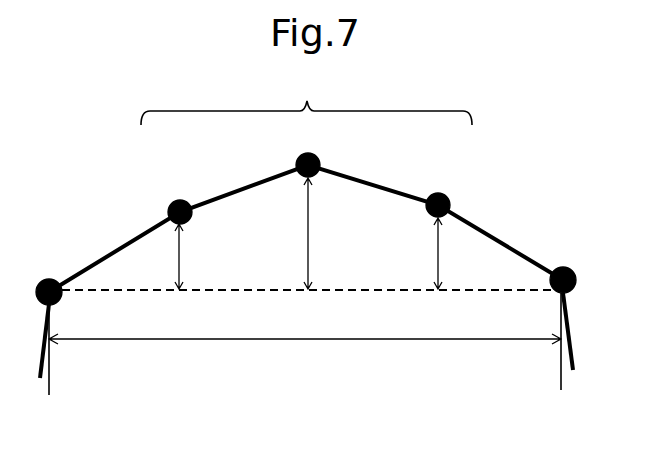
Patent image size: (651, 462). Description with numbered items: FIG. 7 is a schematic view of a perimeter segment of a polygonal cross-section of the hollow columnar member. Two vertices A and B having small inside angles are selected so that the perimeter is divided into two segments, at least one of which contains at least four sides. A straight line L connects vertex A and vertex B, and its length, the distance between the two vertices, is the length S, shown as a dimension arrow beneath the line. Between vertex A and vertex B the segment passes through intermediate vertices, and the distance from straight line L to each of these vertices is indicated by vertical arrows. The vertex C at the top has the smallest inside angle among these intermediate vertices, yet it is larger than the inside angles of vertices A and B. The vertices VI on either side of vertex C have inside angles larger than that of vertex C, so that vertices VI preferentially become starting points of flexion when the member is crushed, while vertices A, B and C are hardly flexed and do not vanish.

The vertex A is at (49, 322).
The vertex B is at (563, 316).
The vertex C is at (308, 151).
The vertex VI is at (302, 195).
The length S is at (305, 328).
The straight line L is at (360, 292).